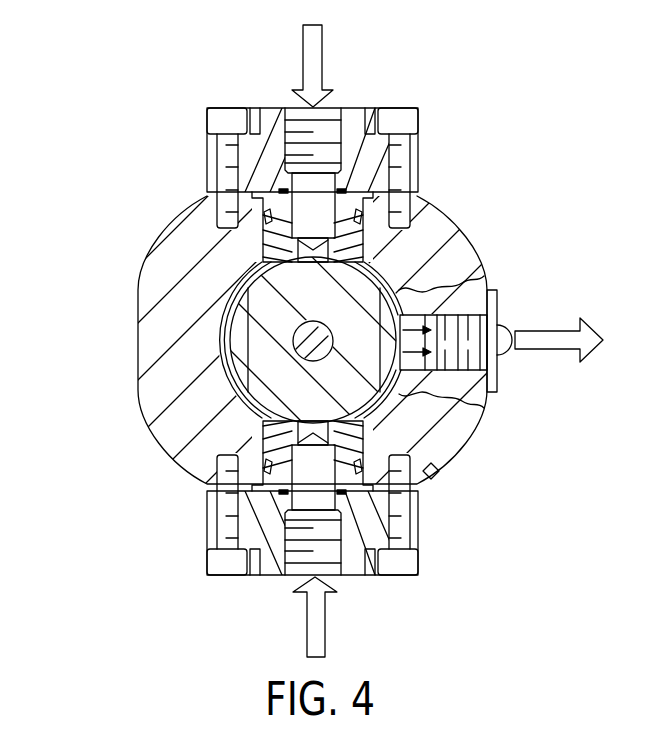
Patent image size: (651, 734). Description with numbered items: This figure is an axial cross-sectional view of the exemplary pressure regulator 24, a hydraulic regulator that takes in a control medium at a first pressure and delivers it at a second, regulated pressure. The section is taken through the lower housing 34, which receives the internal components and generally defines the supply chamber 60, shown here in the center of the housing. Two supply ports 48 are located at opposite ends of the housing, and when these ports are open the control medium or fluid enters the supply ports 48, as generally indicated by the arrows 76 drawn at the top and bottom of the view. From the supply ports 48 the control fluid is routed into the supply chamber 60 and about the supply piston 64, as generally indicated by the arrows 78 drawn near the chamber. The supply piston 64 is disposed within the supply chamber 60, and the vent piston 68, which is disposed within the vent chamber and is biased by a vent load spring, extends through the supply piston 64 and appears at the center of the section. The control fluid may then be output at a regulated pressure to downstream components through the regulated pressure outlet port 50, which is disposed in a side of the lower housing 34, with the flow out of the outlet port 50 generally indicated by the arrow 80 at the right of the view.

The pressure regulator 24 is at (73, 158).
The lower housing 34 is at (153, 266).
The supply ports 48 is at (329, 127).
The regulated pressure outlet port 50 is at (470, 356).
The supply chamber 60 is at (233, 337).
The supply piston 64 is at (401, 289).
The vent piston 68 is at (306, 351).
The arrows 76 is at (302, 57).
The arrows 78 is at (375, 268).
The arrow 80 is at (546, 333).